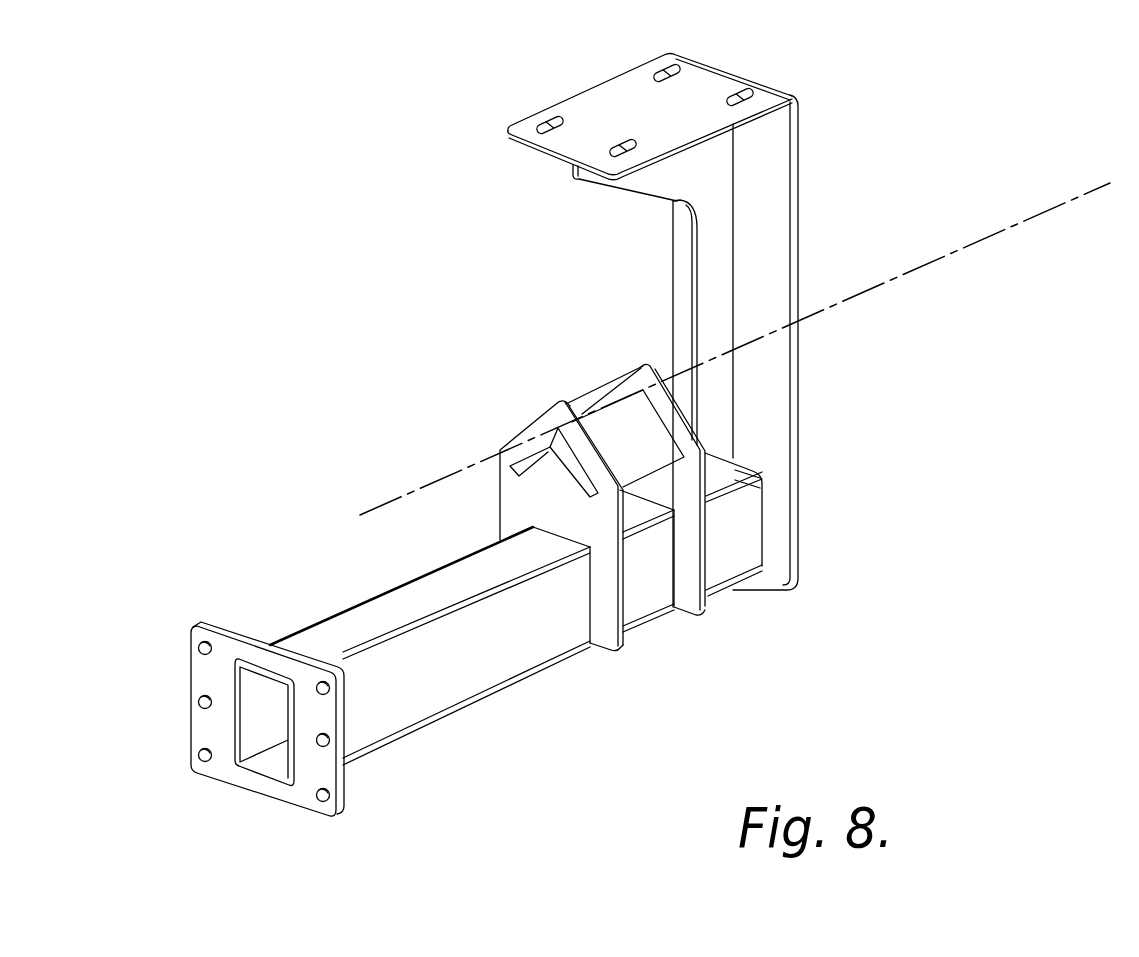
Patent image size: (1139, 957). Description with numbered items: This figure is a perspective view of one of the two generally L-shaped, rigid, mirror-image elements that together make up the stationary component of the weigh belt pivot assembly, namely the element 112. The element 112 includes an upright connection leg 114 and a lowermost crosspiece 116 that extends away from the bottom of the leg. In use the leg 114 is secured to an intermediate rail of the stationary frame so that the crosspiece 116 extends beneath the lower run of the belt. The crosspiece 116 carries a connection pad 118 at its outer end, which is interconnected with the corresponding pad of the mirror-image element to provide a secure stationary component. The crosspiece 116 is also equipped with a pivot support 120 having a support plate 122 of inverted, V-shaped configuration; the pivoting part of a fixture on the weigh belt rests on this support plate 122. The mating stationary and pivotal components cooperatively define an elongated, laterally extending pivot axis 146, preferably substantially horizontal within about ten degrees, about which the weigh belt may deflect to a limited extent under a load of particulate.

The element 112 is at (877, 199).
The upright connection leg 114 is at (773, 230).
The lowermost crosspiece 116 is at (455, 685).
The connection pad 118 is at (327, 768).
The pivot support 120 is at (602, 620).
The support plate 122 is at (650, 450).
The pivot axis 146 is at (1007, 227).